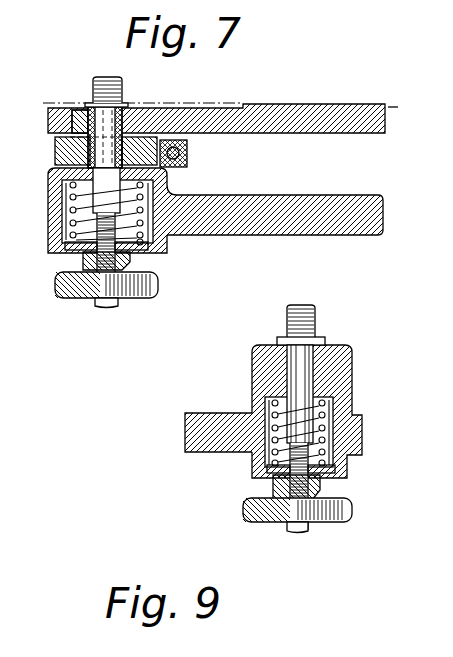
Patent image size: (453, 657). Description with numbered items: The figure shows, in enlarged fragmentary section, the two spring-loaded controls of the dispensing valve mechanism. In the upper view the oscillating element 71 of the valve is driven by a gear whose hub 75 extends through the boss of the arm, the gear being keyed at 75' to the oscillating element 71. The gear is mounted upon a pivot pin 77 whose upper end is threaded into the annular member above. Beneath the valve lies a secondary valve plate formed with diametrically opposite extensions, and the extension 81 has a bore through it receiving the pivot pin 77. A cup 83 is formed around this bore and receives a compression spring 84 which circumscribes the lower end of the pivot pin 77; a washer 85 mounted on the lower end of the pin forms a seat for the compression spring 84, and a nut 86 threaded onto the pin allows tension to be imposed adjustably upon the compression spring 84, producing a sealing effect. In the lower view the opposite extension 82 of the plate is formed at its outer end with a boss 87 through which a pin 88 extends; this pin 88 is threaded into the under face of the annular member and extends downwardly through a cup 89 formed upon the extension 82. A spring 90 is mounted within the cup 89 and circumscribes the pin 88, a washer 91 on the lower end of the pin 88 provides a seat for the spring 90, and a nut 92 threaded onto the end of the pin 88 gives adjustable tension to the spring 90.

In FIG. 7, the oscillating element 71 is at (258, 99).
In FIG. 7, the hub 75 is at (92, 112).
In FIG. 7, the key 75' is at (55, 97).
In FIG. 7, the pivot pin 77 is at (136, 102).
In FIG. 7, the extension 81 is at (247, 193).
In FIG. 9, the extension 82 is at (218, 443).
In FIG. 7, the cup 83 is at (54, 238).
In FIG. 7, the compression spring 84 is at (143, 230).
In FIG. 7, the washer 85 is at (143, 255).
In FIG. 7, the nut 86 is at (82, 293).
In FIG. 9, the boss 87 is at (320, 370).
In FIG. 9, the pin 88 is at (295, 363).
In FIG. 9, the cup 89 is at (337, 416).
In FIG. 9, the spring 90 is at (323, 440).
In FIG. 9, the washer 91 is at (336, 472).
In FIG. 9, the nut 92 is at (350, 510).